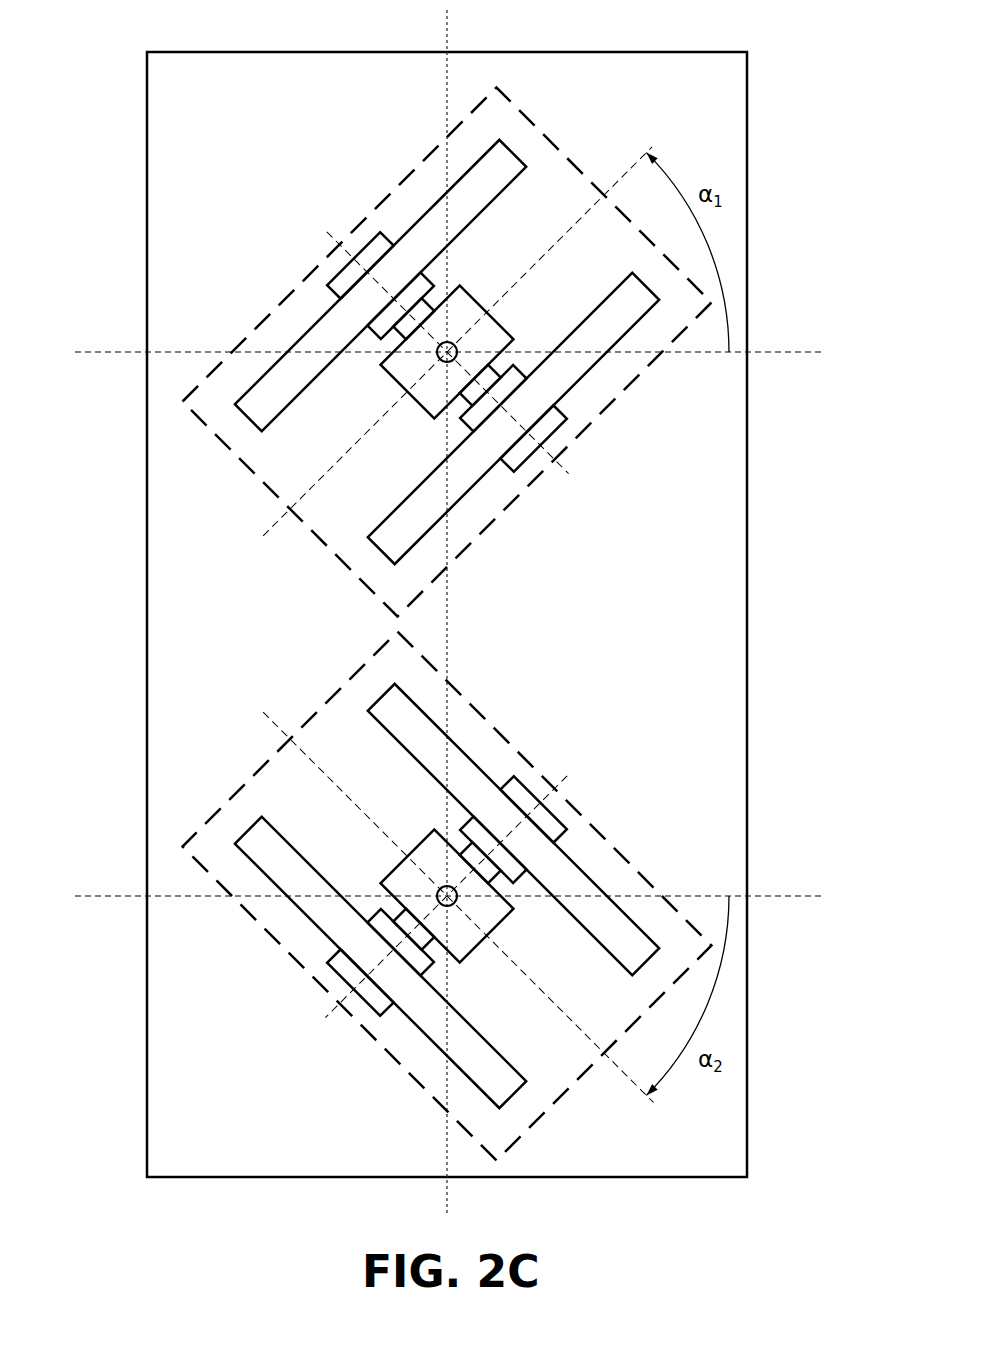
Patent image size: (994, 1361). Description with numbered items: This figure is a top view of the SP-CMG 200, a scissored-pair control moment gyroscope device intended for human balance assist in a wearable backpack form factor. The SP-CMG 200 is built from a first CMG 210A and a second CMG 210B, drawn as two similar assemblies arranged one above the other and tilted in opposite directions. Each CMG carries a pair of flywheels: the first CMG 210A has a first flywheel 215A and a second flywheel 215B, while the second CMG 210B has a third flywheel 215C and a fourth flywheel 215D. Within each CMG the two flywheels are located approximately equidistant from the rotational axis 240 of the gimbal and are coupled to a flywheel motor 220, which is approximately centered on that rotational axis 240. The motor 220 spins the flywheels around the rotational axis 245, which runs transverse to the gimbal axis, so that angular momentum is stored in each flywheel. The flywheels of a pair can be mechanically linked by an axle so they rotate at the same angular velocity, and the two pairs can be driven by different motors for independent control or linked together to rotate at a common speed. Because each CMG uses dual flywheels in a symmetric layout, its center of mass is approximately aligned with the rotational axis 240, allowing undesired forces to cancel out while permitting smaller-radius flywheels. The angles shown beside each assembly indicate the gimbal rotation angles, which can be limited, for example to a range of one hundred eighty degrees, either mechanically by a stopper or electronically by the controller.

The SP-CMG 200 is at (83, 35).
The first CMG 210A is at (284, 166).
The second CMG 210B is at (592, 692).
The first flywheel 215A is at (474, 162).
The second flywheel 215B is at (598, 365).
The third flywheel 215C is at (390, 686).
The fourth flywheel 215D is at (443, 1048).
The flywheel motor 220 is at (494, 326).
The rotational axis of the gimbal 240 is at (656, 144).
The rotational axis of the flywheels 245 is at (578, 483).